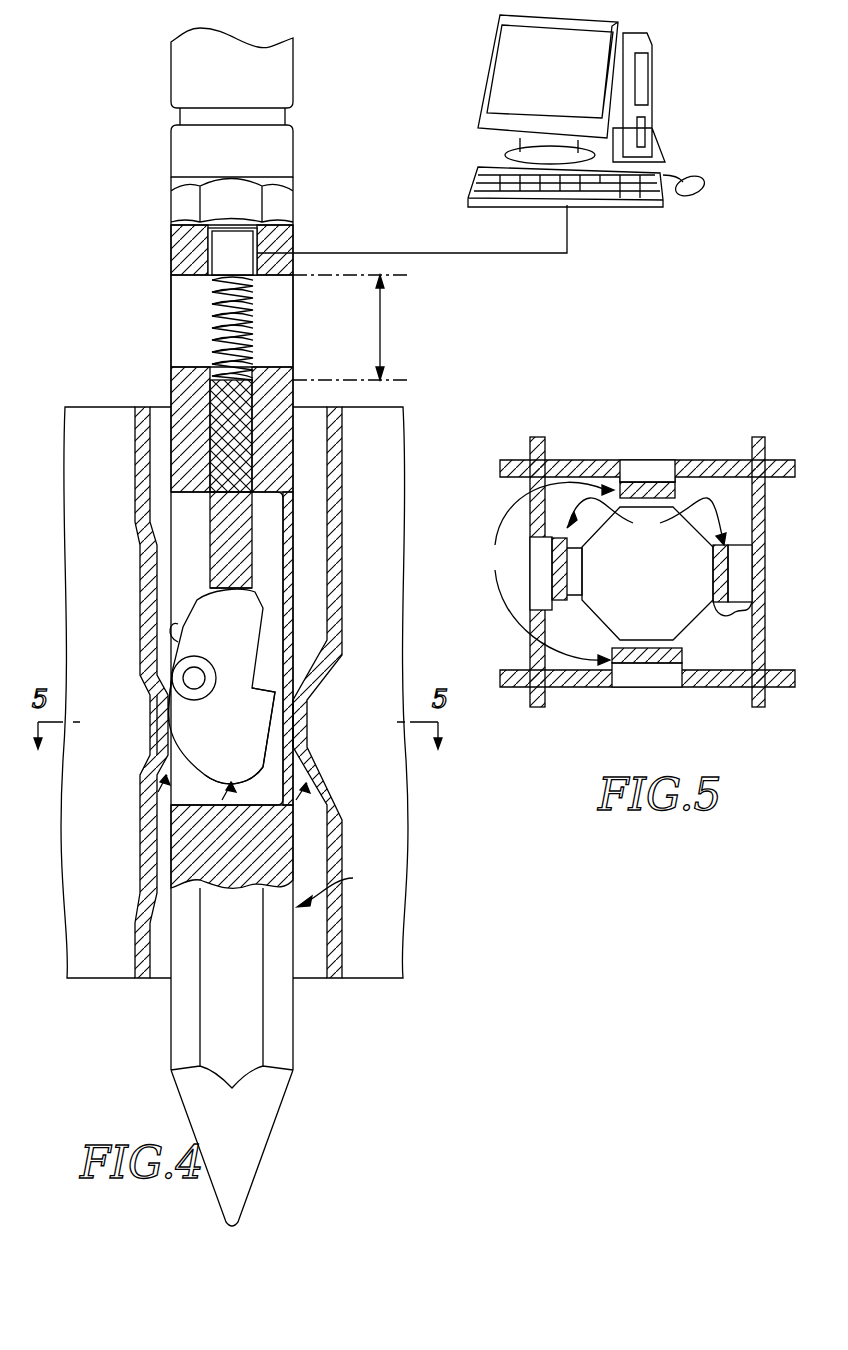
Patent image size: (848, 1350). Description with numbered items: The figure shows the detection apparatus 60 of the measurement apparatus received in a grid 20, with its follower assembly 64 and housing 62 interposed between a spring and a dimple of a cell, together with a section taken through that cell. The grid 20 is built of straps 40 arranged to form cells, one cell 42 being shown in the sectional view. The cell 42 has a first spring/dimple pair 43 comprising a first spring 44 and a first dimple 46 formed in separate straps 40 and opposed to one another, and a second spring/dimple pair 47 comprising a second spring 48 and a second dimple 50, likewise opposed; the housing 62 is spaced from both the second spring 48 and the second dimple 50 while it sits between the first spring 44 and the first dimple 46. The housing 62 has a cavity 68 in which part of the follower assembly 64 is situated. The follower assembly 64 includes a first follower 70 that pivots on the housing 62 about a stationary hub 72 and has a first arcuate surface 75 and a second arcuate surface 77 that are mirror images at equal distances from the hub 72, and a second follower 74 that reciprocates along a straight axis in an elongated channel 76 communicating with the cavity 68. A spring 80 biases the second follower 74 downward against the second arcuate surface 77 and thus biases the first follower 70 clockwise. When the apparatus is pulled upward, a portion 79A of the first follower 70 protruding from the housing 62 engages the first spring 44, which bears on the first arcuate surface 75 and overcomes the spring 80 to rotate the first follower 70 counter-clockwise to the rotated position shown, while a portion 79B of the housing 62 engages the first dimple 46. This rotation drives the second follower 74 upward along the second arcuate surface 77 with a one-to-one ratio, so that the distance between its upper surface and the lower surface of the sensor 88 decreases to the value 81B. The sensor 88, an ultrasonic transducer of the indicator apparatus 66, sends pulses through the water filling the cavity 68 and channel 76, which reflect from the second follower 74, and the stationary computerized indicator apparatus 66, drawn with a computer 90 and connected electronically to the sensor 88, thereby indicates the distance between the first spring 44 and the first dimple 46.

In FIG. 4, the grid 20 is at (408, 948).
In FIG. 4, the strap 40 is at (135, 950).
In FIG. 5, the strap 40 is at (524, 460).
In FIG. 4, the cell 42 is at (330, 940).
In FIG. 5, the cell 42 is at (720, 665).
In FIG. 4, the first spring/dimple pair 43 is at (265, 818).
In FIG. 5, the first spring/dimple pair 43 is at (646, 521).
In FIG. 4, the first spring 44 is at (162, 728).
In FIG. 5, the first spring 44 is at (560, 605).
In FIG. 4, the first dimple 46 is at (305, 725).
In FIG. 5, the first dimple 46 is at (735, 603).
In FIG. 5, the second spring/dimple pair 47 is at (545, 573).
In FIG. 5, the second spring 48 is at (677, 488).
In FIG. 5, the second dimple 50 is at (688, 655).
In FIG. 4, the detection apparatus 60 is at (338, 885).
In FIG. 4, the housing 62 is at (295, 1056).
In FIG. 5, the housing 62 is at (735, 614).
In FIG. 4, the follower assembly 64 is at (250, 822).
In FIG. 4, the indicator apparatus 66 is at (612, 220).
In FIG. 4, the cavity 68 is at (289, 632).
In FIG. 4, the first follower 70 is at (183, 630).
In FIG. 5, the first follower 70 is at (590, 612).
In FIG. 4, the hub 72 is at (197, 680).
In FIG. 4, the second follower 74 is at (216, 512).
In FIG. 4, the first arcuate surface 75 is at (184, 770).
In FIG. 5, the first arcuate surface 75 is at (578, 572).
In FIG. 4, the channel 76 is at (238, 460).
In FIG. 4, the second arcuate surface 77 is at (212, 598).
In FIG. 4, the portion of the first follower 79A is at (165, 722).
In FIG. 4, the portion of the housing 79B is at (298, 720).
In FIG. 4, the spring 80 is at (212, 322).
In FIG. 4, the decreased distance 81B is at (382, 331).
In FIG. 4, the sensor 88 is at (240, 250).
In FIG. 4, the computer 90 is at (508, 72).